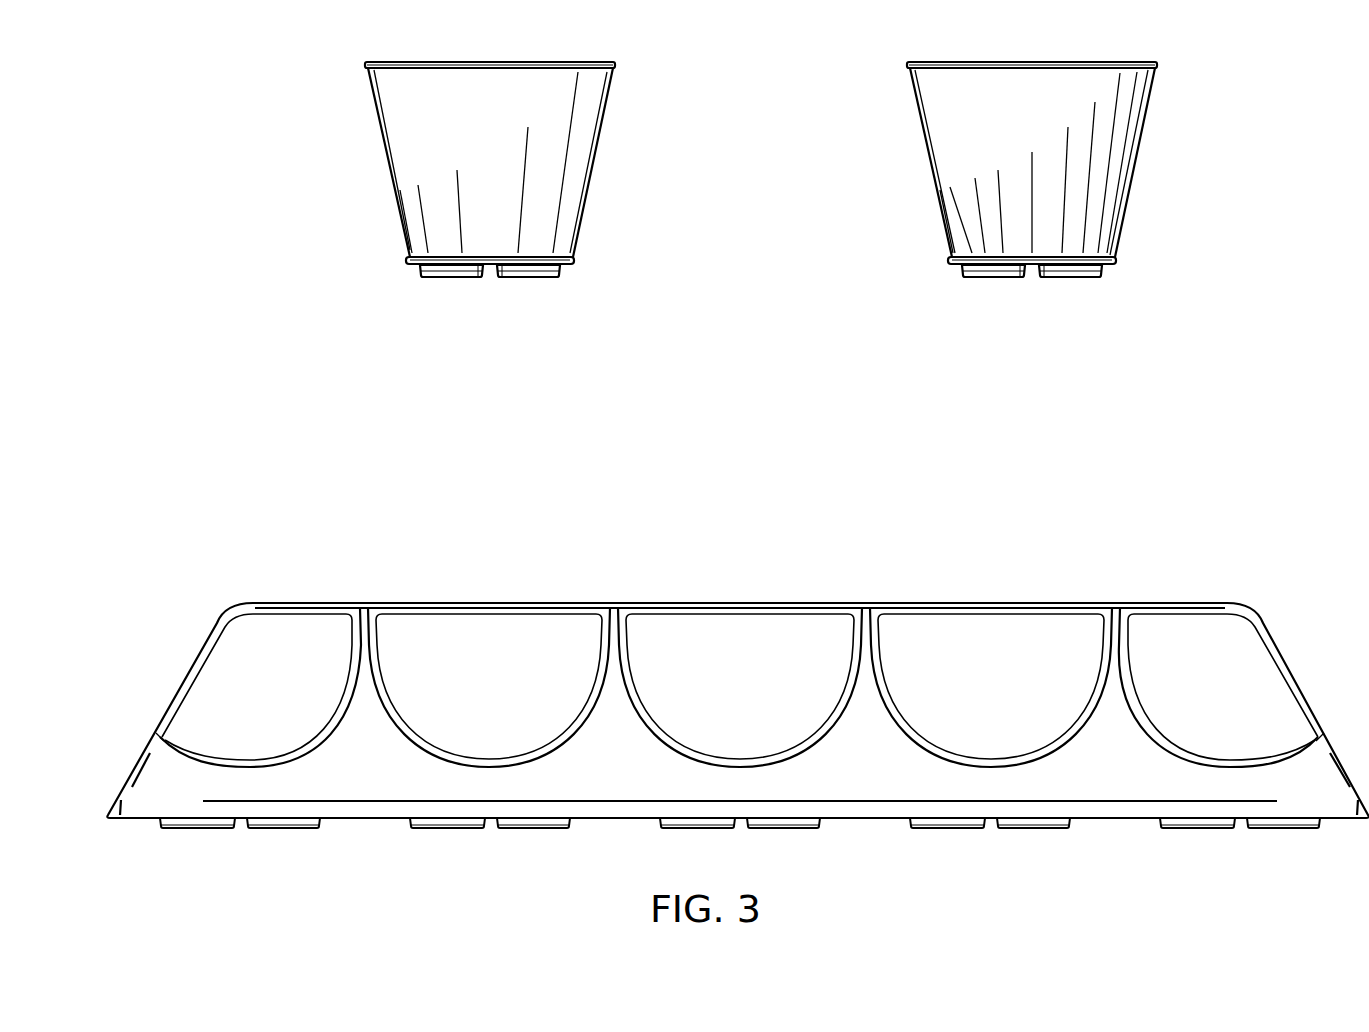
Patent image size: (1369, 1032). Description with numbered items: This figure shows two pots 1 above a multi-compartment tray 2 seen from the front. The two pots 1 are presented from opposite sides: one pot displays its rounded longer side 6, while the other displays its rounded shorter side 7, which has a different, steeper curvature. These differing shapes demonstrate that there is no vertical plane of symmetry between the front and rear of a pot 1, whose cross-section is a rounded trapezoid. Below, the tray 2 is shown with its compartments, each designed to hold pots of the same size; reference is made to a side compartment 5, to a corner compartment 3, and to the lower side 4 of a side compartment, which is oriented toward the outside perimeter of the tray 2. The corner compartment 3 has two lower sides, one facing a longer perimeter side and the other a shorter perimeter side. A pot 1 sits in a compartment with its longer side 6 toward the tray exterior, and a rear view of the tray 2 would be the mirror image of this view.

The pot 1 is at (762, 169).
The multi-compartment tray 2 is at (737, 683).
The corner compartment 3 is at (157, 737).
The lower side of side compartment 4 is at (1040, 762).
The side compartment 5 is at (958, 606).
The rounded longer side 6 is at (457, 145).
The rounded shorter side 7 is at (1067, 168).